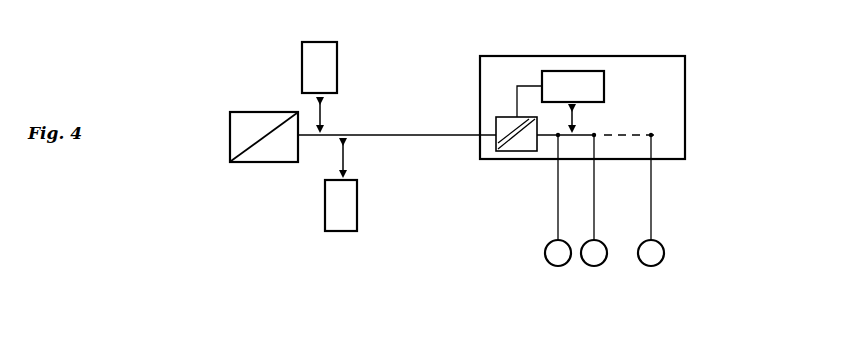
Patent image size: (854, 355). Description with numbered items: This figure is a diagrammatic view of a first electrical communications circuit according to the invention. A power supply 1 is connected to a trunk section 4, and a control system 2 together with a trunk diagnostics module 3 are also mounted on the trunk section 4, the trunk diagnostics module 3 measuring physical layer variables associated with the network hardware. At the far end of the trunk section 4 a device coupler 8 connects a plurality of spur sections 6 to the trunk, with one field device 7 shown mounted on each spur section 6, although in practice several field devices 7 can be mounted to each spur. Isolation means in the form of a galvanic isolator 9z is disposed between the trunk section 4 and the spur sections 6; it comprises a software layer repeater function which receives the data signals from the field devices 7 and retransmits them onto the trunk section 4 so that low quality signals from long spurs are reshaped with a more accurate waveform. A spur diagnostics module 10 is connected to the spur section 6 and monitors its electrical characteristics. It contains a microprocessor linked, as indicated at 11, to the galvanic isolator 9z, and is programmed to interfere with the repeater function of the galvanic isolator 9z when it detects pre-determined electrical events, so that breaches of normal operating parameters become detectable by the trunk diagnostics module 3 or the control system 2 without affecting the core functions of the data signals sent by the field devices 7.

The power supply 1 is at (273, 150).
The control system 2 is at (337, 55).
The trunk diagnostics module 3 is at (338, 217).
The trunk section 4 is at (443, 137).
The spur section 6 is at (557, 180).
The field device 7 is at (557, 255).
The device coupler 8 is at (673, 145).
The galvanic isolator 9z is at (510, 125).
The spur diagnostics module 10 is at (577, 75).
The link between spur diagnostics module and galvanic isolator 11 is at (523, 82).